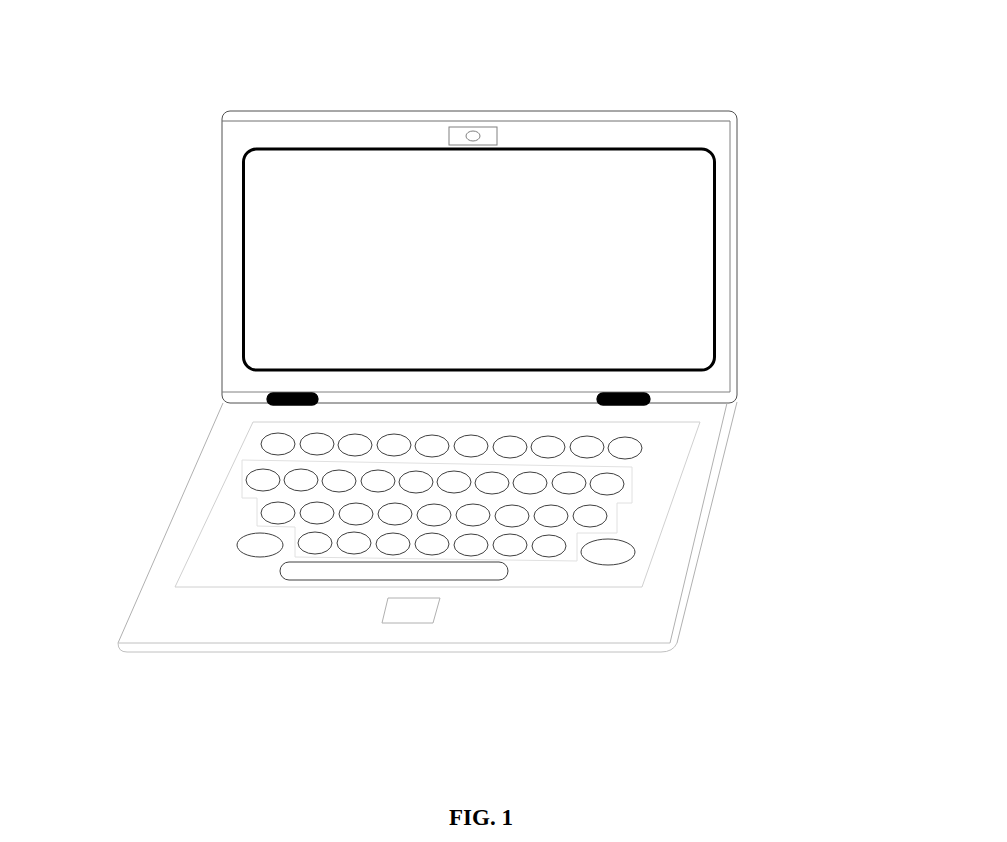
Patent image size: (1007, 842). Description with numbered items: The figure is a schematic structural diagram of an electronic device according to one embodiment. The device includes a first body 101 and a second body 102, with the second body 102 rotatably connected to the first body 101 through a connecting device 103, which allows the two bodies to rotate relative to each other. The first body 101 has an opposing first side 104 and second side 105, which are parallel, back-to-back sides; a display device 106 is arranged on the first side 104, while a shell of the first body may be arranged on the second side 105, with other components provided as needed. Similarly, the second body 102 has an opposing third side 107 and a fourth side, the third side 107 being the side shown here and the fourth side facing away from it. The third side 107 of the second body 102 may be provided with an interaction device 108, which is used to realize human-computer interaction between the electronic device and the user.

The first body 101 is at (223, 256).
The second body 102 is at (303, 643).
The connecting device 103 is at (653, 397).
The first side 104 is at (273, 125).
The second side 105 is at (300, 109).
The display device 106 is at (598, 225).
The third side 107 is at (177, 612).
The interaction device 108 is at (622, 490).